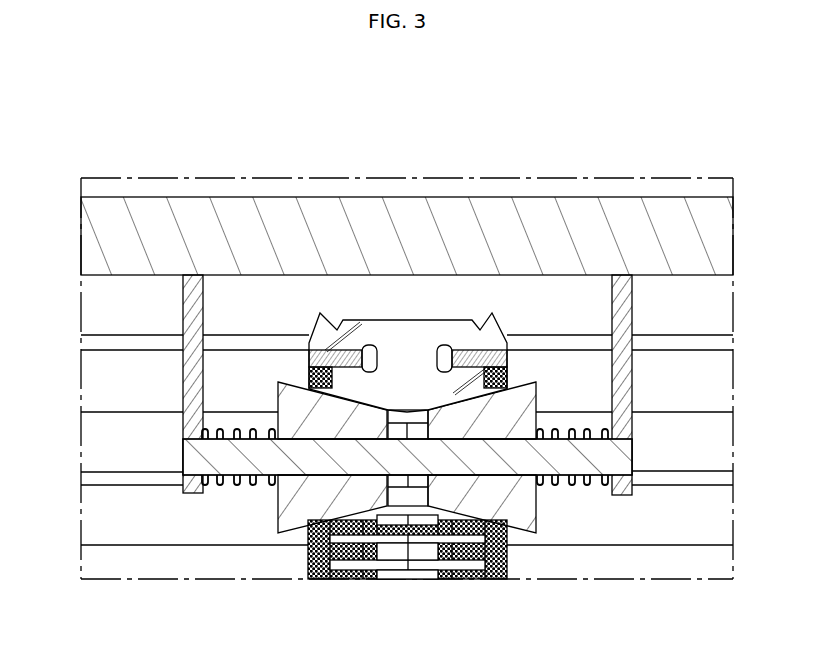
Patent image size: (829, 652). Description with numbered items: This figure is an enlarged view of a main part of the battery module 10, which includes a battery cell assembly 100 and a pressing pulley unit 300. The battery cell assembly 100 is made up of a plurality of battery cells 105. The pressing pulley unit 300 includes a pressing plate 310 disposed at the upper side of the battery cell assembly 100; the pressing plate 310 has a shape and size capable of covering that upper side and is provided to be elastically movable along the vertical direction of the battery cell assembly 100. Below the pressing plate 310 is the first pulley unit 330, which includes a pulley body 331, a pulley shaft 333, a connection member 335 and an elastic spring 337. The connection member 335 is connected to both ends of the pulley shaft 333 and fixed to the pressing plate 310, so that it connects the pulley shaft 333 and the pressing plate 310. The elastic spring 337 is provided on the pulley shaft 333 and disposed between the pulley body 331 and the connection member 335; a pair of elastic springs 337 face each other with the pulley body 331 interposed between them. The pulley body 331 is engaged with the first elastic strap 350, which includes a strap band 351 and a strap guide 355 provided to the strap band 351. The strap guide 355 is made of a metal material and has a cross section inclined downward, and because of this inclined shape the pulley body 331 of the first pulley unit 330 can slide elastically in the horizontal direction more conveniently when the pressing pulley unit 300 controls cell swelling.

The battery module 10 is at (176, 130).
The battery cell assembly 100 is at (72, 311).
The battery cell 105 is at (98, 380).
The pressing pulley unit 300 is at (435, 308).
The pressing plate 310 is at (717, 230).
The first pulley unit 330 is at (384, 502).
The pulley body 331 is at (525, 520).
The pulley shaft 333 is at (625, 457).
The connection member 335 is at (625, 375).
The elastic spring 337 is at (577, 483).
The first elastic strap 350 is at (419, 288).
The strap band 351 is at (333, 332).
The strap guide 355 is at (407, 358).